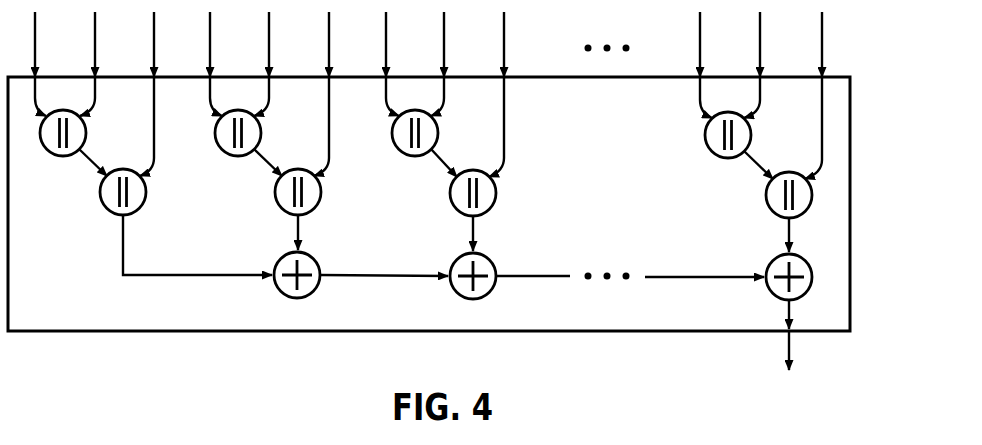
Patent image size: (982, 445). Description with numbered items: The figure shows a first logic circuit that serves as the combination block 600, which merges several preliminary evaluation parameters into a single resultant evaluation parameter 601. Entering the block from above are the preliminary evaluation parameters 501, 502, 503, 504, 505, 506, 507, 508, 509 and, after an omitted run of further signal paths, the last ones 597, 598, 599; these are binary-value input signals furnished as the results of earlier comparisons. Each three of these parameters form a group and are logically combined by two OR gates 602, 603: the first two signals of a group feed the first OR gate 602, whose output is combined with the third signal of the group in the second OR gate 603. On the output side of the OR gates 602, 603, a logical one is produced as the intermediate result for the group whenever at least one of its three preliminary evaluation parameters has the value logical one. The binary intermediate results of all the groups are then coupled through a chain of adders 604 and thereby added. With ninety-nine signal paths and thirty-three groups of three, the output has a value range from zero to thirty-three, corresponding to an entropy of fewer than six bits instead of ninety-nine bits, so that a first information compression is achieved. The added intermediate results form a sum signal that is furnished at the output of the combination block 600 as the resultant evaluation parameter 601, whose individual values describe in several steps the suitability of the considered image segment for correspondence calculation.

The preliminary evaluation parameter 501 is at (56, 64).
The preliminary evaluation parameter 502 is at (108, 64).
The preliminary evaluation parameter 503 is at (168, 94).
The preliminary evaluation parameter 504 is at (231, 64).
The preliminary evaluation parameter 505 is at (283, 64).
The preliminary evaluation parameter 506 is at (343, 94).
The preliminary evaluation parameter 507 is at (408, 64).
The preliminary evaluation parameter 508 is at (460, 64).
The preliminary evaluation parameter 509 is at (519, 94).
The preliminary evaluation parameter 597 is at (722, 65).
The preliminary evaluation parameter 598 is at (774, 65).
The preliminary evaluation parameter 599 is at (834, 95).
The combination block 600 is at (42, 331).
The resultant evaluation parameter 601 is at (812, 335).
The OR gate 602 is at (55, 157).
The OR gate 603 is at (112, 215).
The adder 604 is at (315, 291).